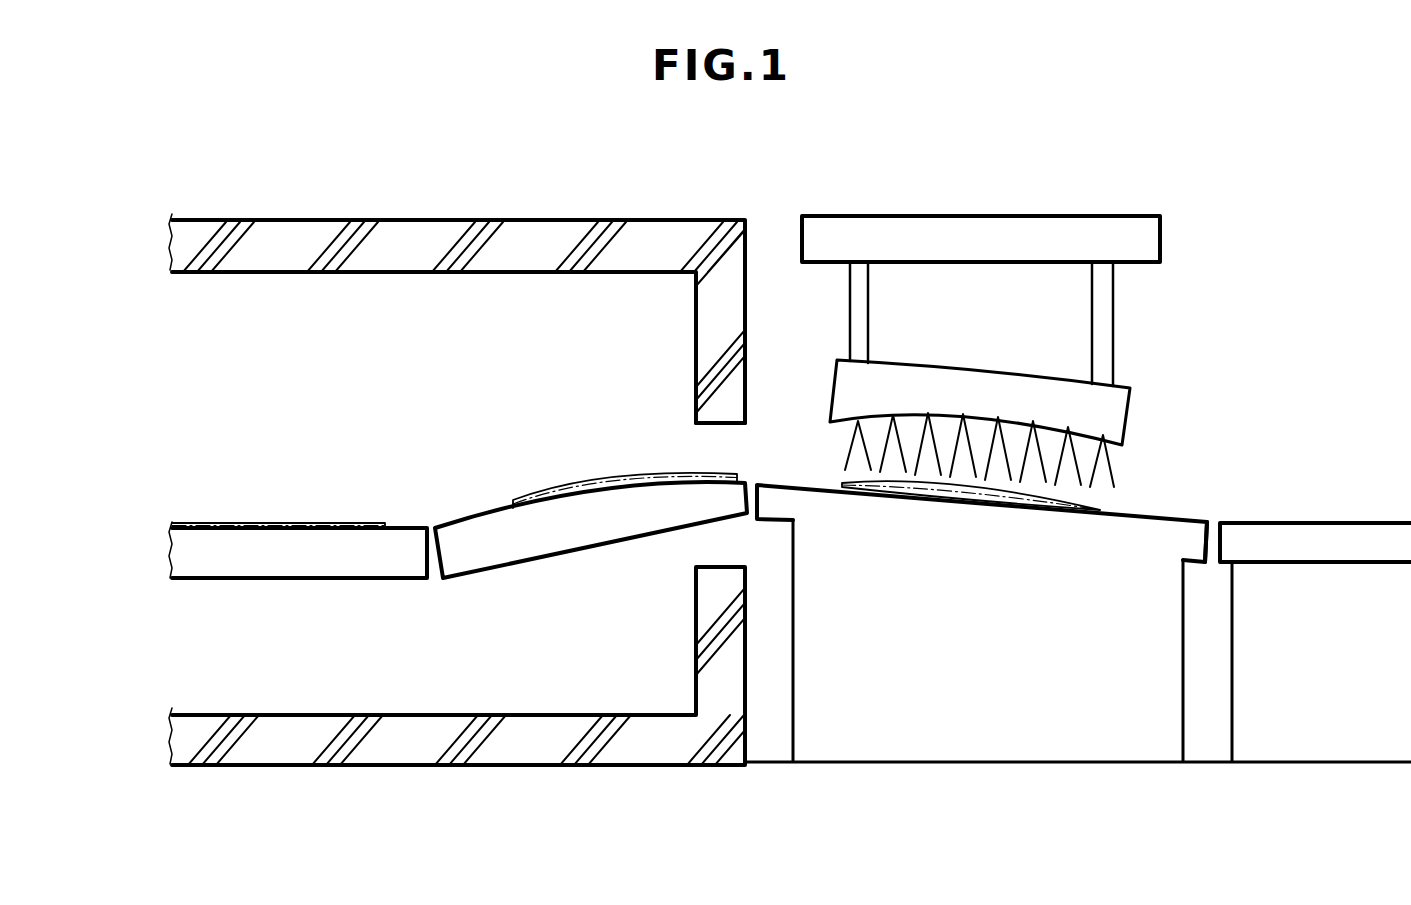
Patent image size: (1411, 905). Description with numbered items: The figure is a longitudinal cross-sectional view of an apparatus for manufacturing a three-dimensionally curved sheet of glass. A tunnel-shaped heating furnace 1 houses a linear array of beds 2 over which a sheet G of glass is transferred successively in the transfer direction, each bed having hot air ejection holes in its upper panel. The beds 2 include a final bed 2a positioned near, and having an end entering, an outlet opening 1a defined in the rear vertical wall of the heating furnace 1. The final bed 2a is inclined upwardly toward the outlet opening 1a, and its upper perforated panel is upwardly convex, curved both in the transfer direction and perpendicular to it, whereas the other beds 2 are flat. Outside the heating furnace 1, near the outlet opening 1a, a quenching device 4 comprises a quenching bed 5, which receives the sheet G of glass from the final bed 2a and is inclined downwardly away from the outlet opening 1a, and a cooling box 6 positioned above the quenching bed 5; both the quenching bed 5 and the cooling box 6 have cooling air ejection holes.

The heating furnace 1 is at (425, 232).
The outlet opening 1a is at (706, 441).
The beds 2 is at (320, 567).
The final bed 2a is at (605, 532).
The sheet of glass G is at (285, 523).
The quenching device 4 is at (1063, 213).
The quenching bed 5 is at (1037, 532).
The cooling box 6 is at (1107, 410).